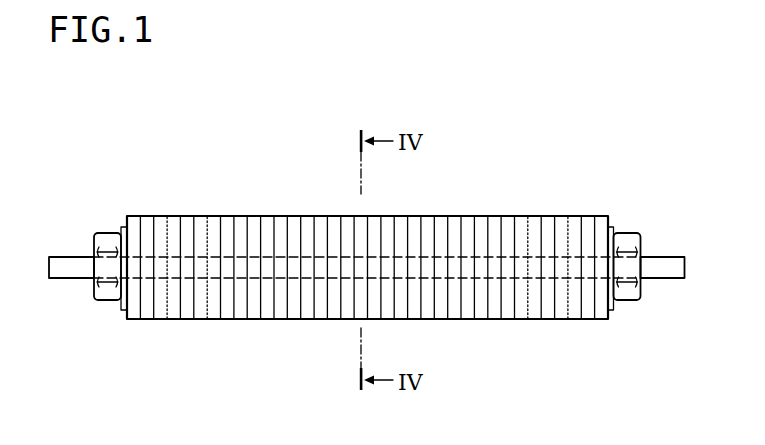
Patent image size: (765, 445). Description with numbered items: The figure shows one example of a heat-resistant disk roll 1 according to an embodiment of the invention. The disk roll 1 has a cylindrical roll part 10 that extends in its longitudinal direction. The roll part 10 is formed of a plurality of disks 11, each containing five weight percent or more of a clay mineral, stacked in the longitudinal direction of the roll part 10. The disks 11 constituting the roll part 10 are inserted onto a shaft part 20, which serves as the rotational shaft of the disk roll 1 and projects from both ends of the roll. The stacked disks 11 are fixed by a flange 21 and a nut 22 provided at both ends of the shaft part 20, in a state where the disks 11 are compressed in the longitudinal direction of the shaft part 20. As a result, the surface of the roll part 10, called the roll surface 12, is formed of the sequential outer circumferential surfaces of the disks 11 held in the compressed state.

The disk roll 1 is at (501, 149).
The roll part 10 is at (608, 212).
The disk 11 is at (551, 312).
The roll surface 12 is at (210, 320).
The shaft part 20 is at (660, 258).
The flange 21 is at (121, 230).
The nut 22 is at (108, 238).